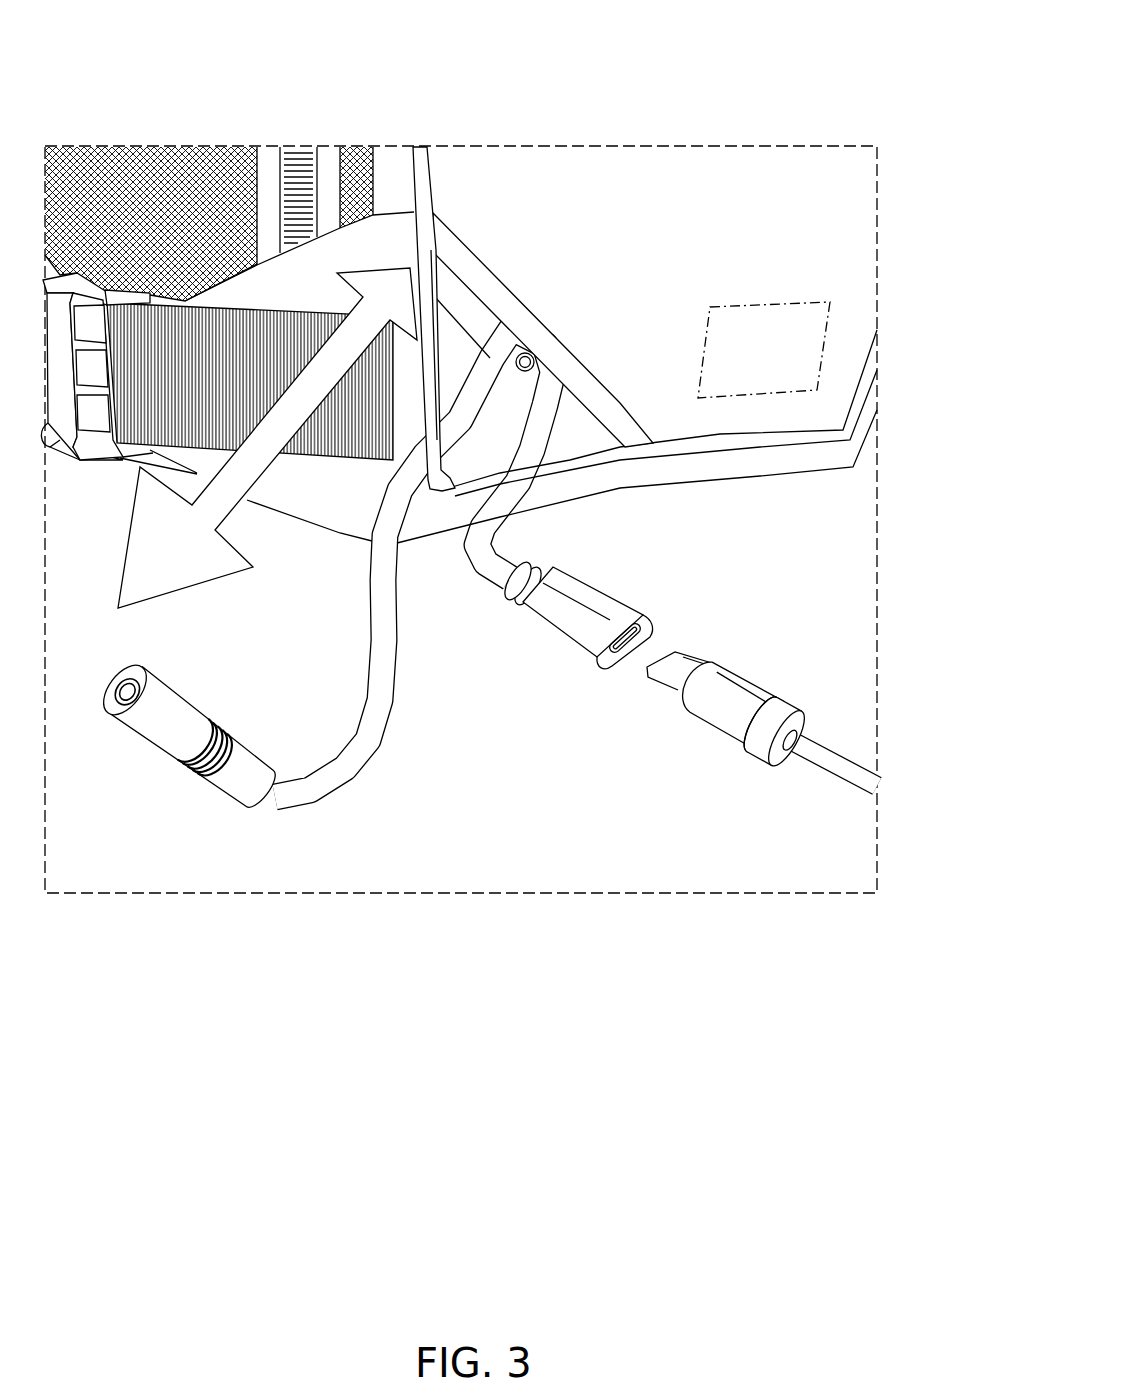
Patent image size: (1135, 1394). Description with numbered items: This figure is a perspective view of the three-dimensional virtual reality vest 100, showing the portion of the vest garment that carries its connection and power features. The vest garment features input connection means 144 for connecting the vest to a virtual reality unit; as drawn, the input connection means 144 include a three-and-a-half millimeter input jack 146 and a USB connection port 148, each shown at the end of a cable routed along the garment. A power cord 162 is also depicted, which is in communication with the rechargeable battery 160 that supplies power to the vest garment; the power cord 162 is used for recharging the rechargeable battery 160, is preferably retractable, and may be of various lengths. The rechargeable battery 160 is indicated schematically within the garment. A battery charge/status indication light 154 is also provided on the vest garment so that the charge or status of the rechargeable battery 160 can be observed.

The three-dimensional virtual reality vest 100 is at (636, 101).
The input connection means 144 is at (609, 297).
The 3.5 mm input jack 146 is at (143, 718).
The USB connection port 148 is at (587, 600).
The battery charge/status indication light 154 is at (524, 371).
The rechargeable battery 160 is at (768, 343).
The power cord 162 is at (733, 692).